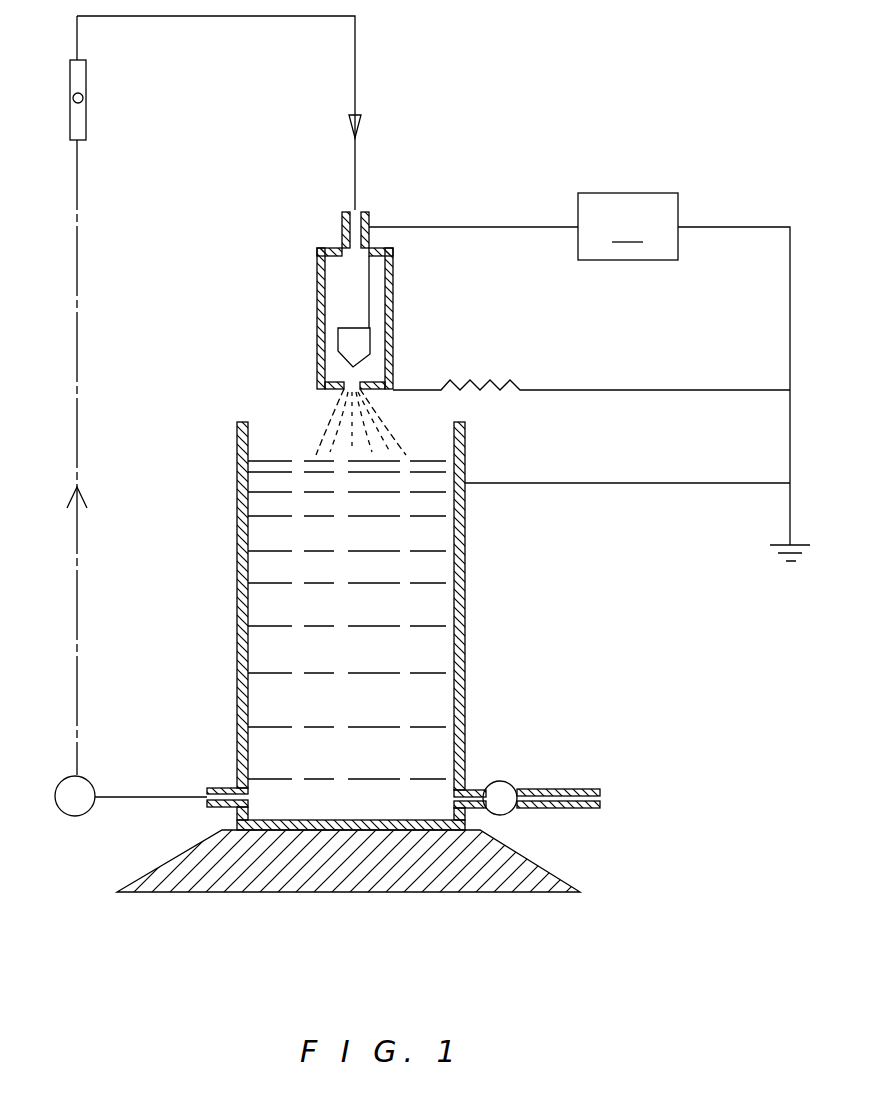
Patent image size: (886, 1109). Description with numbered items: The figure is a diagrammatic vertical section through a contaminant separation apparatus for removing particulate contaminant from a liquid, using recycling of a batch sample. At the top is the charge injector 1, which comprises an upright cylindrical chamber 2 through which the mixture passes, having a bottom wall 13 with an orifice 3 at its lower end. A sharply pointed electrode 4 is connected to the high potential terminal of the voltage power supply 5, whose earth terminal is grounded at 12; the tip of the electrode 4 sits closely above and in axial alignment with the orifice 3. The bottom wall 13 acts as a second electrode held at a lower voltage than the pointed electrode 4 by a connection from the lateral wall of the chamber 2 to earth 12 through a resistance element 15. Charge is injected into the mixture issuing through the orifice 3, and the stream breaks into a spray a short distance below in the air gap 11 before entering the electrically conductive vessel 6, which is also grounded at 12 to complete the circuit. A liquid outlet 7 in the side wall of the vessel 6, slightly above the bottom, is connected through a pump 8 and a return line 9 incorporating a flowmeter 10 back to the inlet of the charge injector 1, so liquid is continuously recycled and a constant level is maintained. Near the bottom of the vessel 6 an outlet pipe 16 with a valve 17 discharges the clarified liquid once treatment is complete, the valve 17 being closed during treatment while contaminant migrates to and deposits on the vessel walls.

The charge injector 1 is at (314, 301).
The chamber 2 is at (395, 358).
The orifice 3 is at (345, 395).
The pointed electrode 4 is at (355, 345).
The voltage power supply 5 is at (684, 369).
The vessel 6 is at (458, 656).
The liquid outlet 7 is at (222, 787).
The pump 8 is at (73, 816).
The return line 9 is at (76, 432).
The flowmeter 10 is at (85, 127).
The air gap 11 is at (338, 444).
The ground 12 is at (805, 543).
The bottom wall 13 is at (378, 392).
The resistance element 15 is at (478, 383).
The outlet pipe 16 is at (547, 790).
The valve 17 is at (502, 781).